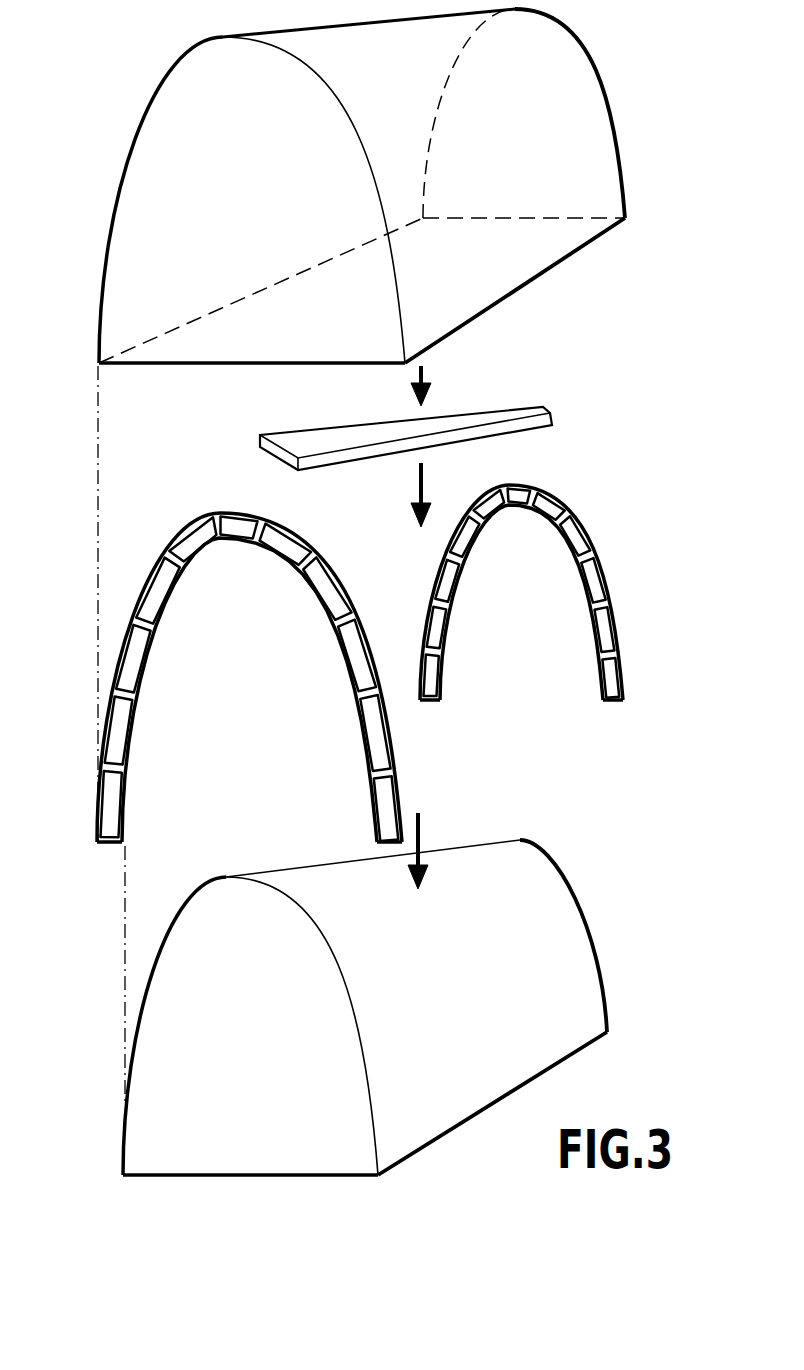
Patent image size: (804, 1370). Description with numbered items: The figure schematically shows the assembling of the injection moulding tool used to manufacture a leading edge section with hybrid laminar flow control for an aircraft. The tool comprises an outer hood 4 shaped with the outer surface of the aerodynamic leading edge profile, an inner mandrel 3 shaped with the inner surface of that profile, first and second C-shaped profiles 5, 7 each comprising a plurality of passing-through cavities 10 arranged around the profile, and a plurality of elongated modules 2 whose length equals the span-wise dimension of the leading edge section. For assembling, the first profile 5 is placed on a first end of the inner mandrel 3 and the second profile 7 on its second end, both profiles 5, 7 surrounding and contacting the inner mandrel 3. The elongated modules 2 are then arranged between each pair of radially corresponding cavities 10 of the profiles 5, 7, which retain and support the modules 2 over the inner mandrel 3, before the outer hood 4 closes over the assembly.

The elongated module 2 is at (533, 410).
The inner mandrel 3 is at (552, 910).
The outer hood 4 is at (578, 142).
The first C-shaped profile 5 is at (249, 659).
The second C-shaped profile 7 is at (598, 570).
The passing-through cavity 10 is at (123, 720).